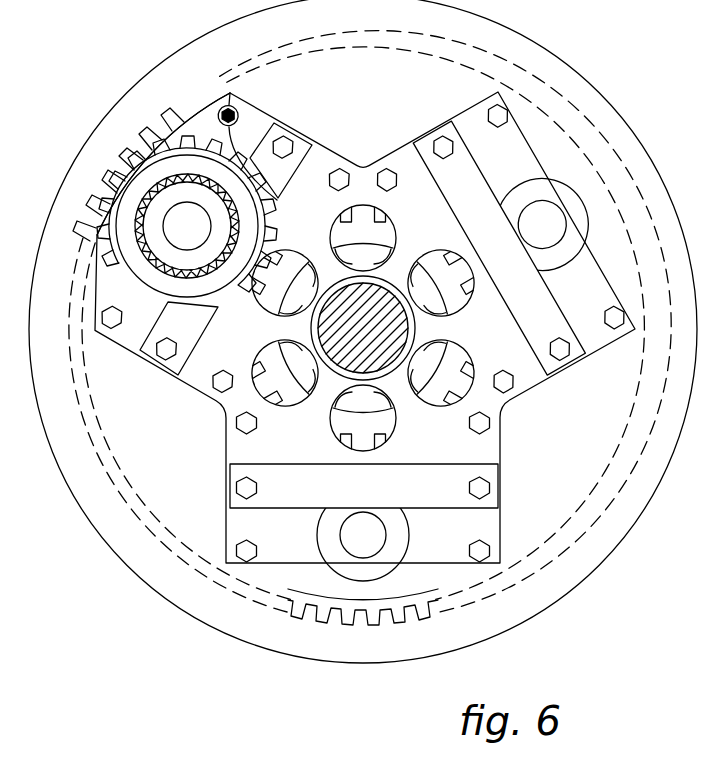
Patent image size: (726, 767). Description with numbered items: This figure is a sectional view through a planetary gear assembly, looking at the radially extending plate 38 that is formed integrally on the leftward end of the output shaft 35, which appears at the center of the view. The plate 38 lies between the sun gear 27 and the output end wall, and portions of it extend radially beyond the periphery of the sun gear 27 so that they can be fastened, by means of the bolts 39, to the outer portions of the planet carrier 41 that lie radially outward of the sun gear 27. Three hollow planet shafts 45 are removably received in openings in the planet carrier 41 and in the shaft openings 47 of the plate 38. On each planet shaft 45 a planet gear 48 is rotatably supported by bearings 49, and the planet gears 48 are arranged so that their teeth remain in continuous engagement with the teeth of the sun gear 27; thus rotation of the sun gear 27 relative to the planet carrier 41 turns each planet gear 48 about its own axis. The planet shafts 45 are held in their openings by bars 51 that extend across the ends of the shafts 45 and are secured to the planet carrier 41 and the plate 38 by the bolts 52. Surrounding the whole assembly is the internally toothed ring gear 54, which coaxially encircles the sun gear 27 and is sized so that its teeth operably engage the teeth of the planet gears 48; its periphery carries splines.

The sun gear 27 is at (440, 260).
The output shaft 35 is at (406, 318).
The plate 38 is at (318, 162).
The bolts 39 is at (488, 110).
The planet carrier 41 is at (197, 112).
The planet shafts 45 is at (394, 556).
The shaft openings 47 is at (556, 184).
The planet gears 48 is at (97, 225).
The bearings 49 is at (210, 270).
The bars 51 is at (273, 130).
The bolts 52 is at (285, 142).
The ring gear 54 is at (105, 135).